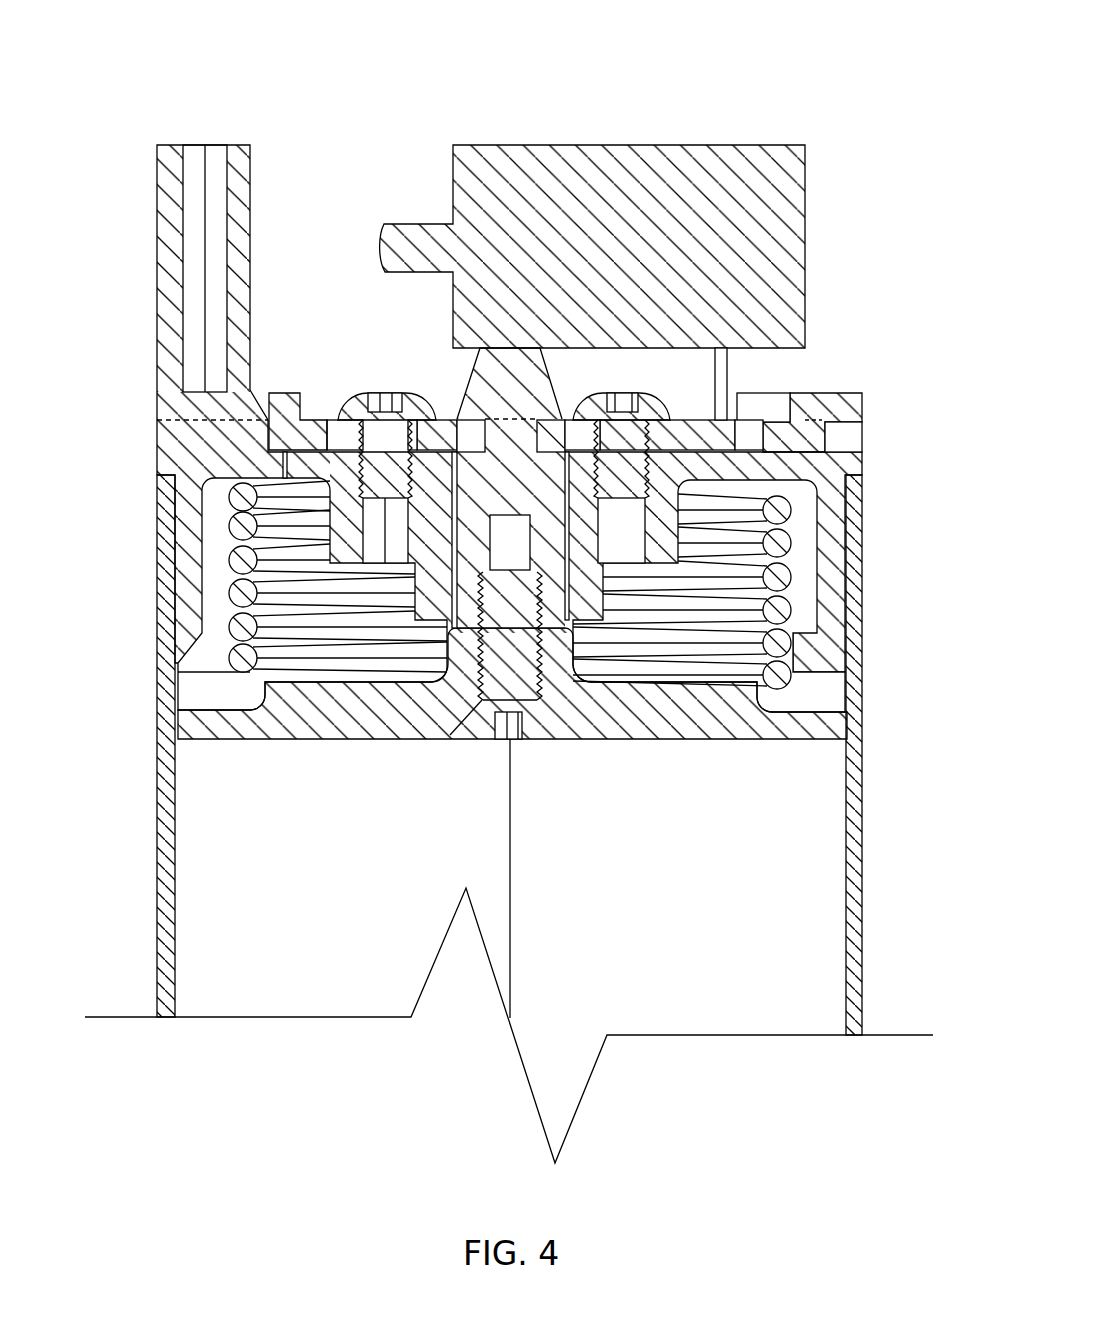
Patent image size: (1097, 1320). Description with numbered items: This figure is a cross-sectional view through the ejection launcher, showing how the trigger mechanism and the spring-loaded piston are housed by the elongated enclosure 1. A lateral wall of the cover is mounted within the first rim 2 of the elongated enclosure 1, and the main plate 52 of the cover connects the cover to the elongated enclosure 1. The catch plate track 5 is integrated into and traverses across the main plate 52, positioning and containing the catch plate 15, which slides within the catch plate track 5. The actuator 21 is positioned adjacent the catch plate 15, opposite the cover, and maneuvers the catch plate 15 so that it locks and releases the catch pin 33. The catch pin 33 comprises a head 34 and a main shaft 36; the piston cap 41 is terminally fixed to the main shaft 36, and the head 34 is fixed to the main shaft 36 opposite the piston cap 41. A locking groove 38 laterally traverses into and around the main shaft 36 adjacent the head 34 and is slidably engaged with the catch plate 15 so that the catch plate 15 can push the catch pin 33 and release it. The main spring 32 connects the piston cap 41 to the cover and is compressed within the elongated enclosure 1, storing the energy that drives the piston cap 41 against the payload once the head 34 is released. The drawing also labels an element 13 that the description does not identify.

The elongated enclosure 1 is at (870, 497).
The first rim 2 is at (857, 452).
The catch plate track 5 is at (752, 440).
The tube 13 is at (175, 146).
The catch plate 15 is at (279, 393).
The actuator 21 is at (820, 141).
The main spring 32 is at (790, 688).
The catch pin 33 is at (440, 359).
The head 34 is at (525, 394).
The main shaft 36 is at (525, 504).
The locking groove 38 is at (471, 441).
The piston cap 41 is at (699, 739).
The main plate 52 is at (160, 466).